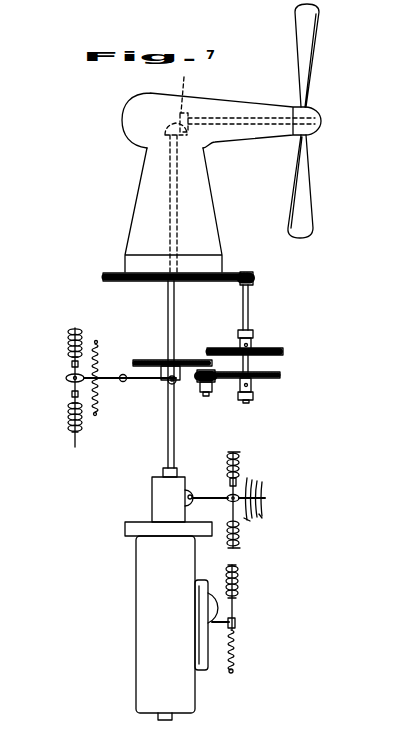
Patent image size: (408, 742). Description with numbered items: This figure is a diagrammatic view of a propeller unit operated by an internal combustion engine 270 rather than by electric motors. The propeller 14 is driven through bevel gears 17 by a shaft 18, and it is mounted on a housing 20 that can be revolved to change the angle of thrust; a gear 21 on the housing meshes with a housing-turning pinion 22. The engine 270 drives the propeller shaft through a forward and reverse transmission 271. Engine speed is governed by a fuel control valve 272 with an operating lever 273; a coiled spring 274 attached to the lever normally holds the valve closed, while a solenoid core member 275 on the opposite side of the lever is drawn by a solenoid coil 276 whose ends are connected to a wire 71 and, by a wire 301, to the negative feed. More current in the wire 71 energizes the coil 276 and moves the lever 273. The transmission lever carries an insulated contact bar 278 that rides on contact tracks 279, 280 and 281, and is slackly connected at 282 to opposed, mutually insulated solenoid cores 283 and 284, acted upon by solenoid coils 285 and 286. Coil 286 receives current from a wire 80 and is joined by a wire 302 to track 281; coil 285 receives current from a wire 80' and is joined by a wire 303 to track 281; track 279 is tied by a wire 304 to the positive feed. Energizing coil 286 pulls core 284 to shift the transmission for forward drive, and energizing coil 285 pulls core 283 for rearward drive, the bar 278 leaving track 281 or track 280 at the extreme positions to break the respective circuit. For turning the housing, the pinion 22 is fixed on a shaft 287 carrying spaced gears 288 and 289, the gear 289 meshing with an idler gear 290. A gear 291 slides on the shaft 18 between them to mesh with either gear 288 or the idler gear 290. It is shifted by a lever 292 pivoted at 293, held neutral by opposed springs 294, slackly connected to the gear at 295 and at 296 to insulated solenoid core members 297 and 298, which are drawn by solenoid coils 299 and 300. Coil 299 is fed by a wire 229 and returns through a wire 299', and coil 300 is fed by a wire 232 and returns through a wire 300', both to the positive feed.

The propeller 14 is at (305, 188).
The bevel gears 17 is at (240, 172).
The shaft 18 is at (168, 293).
The housing 20 is at (143, 192).
The gear 21 is at (104, 276).
The housing-turning pinion 22 is at (254, 278).
The wire 71 is at (238, 565).
The wire 80 is at (259, 544).
The wire 80' is at (250, 488).
The wire 229 is at (68, 432).
The wire 232 is at (72, 330).
The internal combustion engine 270 is at (137, 593).
The forward and reverse transmission 271 is at (152, 496).
The fuel control valve 272 is at (206, 496).
The operating lever 273 is at (236, 626).
The coiled spring 274 is at (235, 650).
The solenoid core member 275 is at (238, 607).
The solenoid coil 276 is at (240, 585).
The contact bar 278 is at (266, 498).
The contact track 279 is at (266, 487).
The contact track 280 is at (261, 506).
The contact track 281 is at (259, 518).
The slack connection 282 is at (228, 503).
The solenoid core 283 is at (230, 480).
The solenoid core 284 is at (232, 515).
The solenoid coil 285 is at (233, 455).
The solenoid coil 286 is at (240, 549).
The shaft 287 is at (249, 306).
The gear 288 is at (284, 351).
The gear 289 is at (282, 375).
The idler gear 290 is at (199, 383).
The gear 291 is at (156, 360).
The lever 292 is at (108, 375).
The pivot 293 is at (122, 383).
The opposed springs 294 is at (96, 344).
The slack connection 295 is at (168, 385).
The slack connection 296 is at (66, 378).
The solenoid core member 297 is at (69, 396).
The solenoid core member 298 is at (67, 365).
The solenoid coil 299 is at (72, 432).
The wire 299' is at (47, 414).
The solenoid coil 300 is at (88, 331).
The wire 300' is at (50, 348).
The wire 301 is at (238, 598).
The wire 302 is at (250, 521).
The wire 303 is at (248, 478).
The wire 304 is at (265, 481).